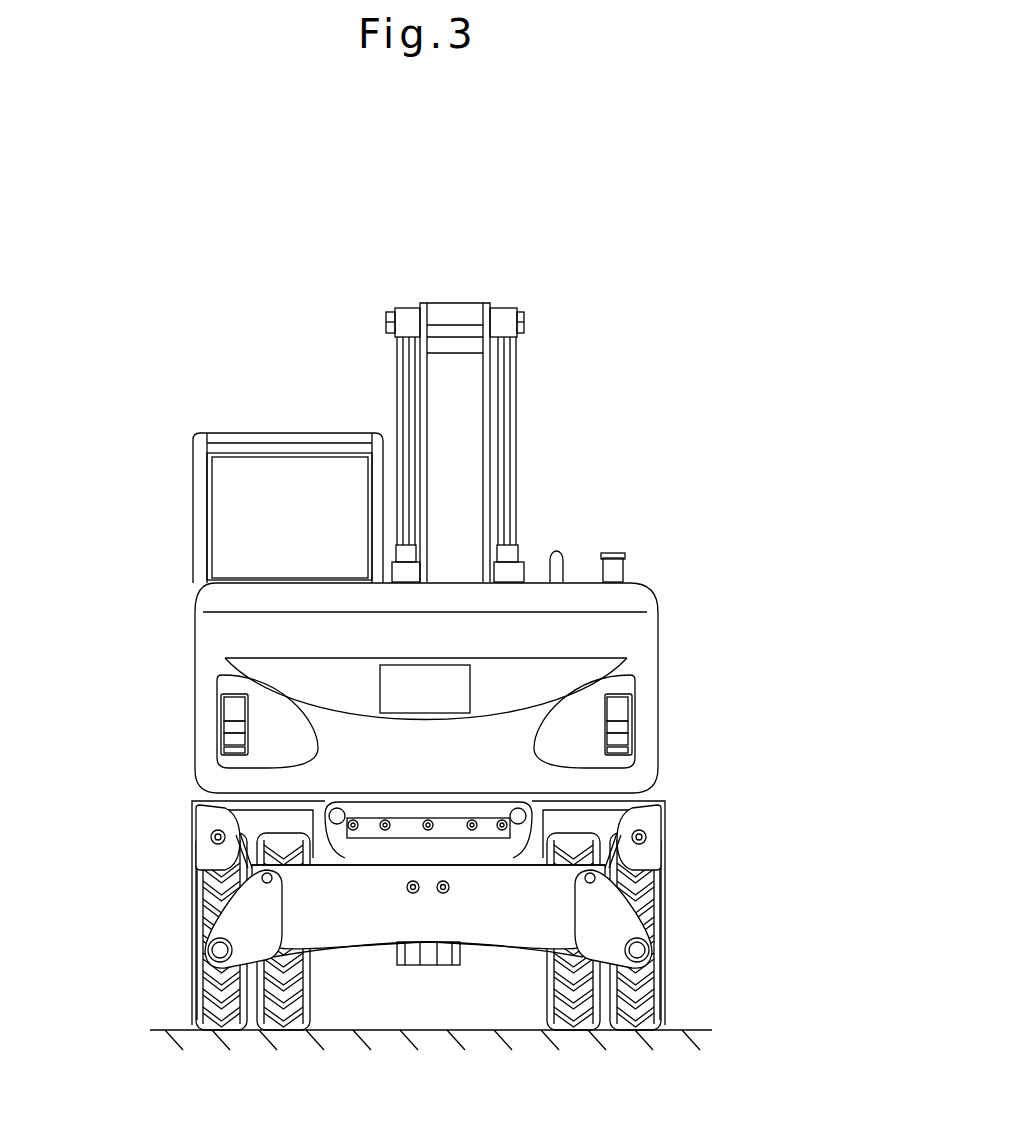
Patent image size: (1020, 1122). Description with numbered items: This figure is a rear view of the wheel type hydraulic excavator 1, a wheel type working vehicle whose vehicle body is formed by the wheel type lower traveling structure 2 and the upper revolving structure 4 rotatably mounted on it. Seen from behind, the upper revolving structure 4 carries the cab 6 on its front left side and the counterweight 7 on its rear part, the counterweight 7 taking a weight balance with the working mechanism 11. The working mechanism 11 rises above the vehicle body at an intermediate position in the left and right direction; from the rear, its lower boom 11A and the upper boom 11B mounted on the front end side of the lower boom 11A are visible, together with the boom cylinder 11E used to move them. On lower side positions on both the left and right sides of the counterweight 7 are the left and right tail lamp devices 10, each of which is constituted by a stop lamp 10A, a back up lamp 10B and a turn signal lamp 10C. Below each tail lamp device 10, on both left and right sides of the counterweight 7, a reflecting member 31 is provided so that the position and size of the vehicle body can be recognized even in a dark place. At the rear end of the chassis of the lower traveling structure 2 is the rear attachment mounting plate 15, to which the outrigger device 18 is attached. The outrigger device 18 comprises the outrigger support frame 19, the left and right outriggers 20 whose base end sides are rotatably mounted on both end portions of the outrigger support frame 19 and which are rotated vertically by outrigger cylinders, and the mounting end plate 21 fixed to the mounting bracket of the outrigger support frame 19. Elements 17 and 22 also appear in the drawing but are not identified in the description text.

The wheel type hydraulic excavator 1 is at (255, 381).
The wheel type lower traveling structure 2 is at (686, 923).
The upper revolving structure 4 is at (656, 570).
The cab 6 is at (200, 515).
The counterweight 7 is at (632, 642).
The tail lamp device 10 is at (222, 720).
The stop lamp 10A is at (622, 702).
The back up lamp 10B is at (622, 717).
The turn signal lamp 10C is at (622, 749).
The working mechanism 11 is at (469, 291).
The lower boom 11A is at (462, 418).
The upper boom 11B is at (445, 310).
The boom cylinder 11E is at (400, 392).
The rear attachment mounting plate 15 is at (522, 830).
The wheel 17 is at (202, 975).
The outrigger device 18 is at (194, 915).
The outrigger support frame 19 is at (477, 920).
The outrigger 20 is at (218, 887).
The mounting end plate 21 is at (402, 828).
The center bolt 22 is at (428, 822).
The reflecting member 31 is at (222, 750).